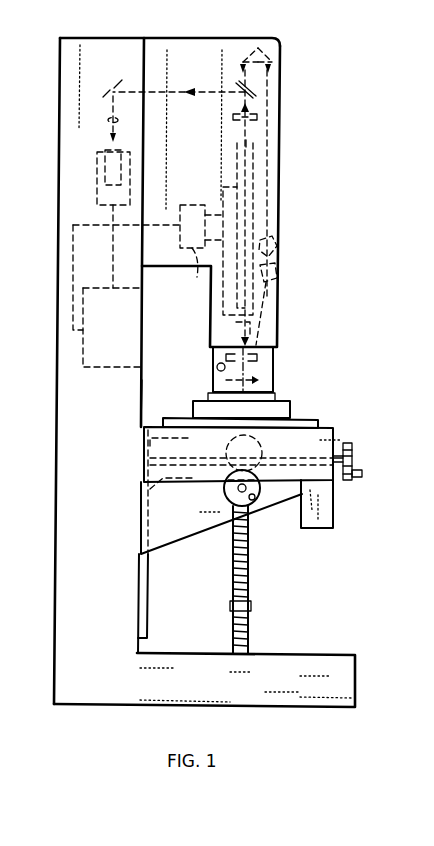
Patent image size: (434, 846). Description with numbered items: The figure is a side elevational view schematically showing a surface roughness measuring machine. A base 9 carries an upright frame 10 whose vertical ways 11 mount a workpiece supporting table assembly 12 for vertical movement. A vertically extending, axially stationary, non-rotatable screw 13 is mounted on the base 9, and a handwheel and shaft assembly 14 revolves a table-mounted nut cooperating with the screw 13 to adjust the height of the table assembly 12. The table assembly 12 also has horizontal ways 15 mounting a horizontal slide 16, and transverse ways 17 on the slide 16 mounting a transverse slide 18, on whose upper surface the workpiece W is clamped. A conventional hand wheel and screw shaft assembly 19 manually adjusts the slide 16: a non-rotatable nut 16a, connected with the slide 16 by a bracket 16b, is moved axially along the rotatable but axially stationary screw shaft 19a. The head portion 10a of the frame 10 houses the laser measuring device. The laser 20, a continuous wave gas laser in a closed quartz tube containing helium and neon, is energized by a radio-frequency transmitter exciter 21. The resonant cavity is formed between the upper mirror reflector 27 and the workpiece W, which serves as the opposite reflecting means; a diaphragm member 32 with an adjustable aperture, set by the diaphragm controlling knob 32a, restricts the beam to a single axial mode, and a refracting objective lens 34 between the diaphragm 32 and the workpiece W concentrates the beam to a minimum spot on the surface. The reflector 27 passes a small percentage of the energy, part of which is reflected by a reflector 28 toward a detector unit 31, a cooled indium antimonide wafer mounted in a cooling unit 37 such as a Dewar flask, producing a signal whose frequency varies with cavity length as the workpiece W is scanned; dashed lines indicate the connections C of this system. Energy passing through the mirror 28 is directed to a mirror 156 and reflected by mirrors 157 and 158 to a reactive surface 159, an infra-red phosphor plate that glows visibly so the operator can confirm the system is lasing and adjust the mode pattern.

The base 9 is at (293, 660).
The upright frame 10 is at (59, 430).
The head portion 10a is at (279, 146).
The vertical ways 11 is at (148, 621).
The workpiece supporting table assembly 12 is at (256, 510).
The screw 13 is at (249, 608).
The handwheel and shaft assembly 14 is at (221, 536).
The horizontal ways 15 is at (164, 428).
The horizontal slide 16 is at (320, 428).
The non-rotatable nut 16a is at (150, 489).
The bracket 16b is at (149, 437).
The transverse ways 17 is at (305, 421).
The transverse slide 18 is at (288, 417).
The hand wheel and screw shaft assembly 19 is at (352, 453).
The screw shaft 19a is at (338, 447).
The laser 20 is at (253, 172).
The radio-frequency transmitter exciter 21 is at (197, 279).
The mirror reflector 27 is at (262, 110).
The reflector 28 is at (262, 88).
The detector unit 31 is at (105, 151).
The diaphragm member 32 is at (279, 333).
The diaphragm controlling knob 32a is at (213, 349).
The refracting objective lens 34 is at (222, 378).
The cooling unit 37 is at (97, 186).
The mirror 156 is at (245, 40).
The mirror 157 is at (272, 40).
The mirror 158 is at (279, 292).
The reactive surface 159 is at (279, 236).
The circuit C is at (73, 369).
The workpiece W is at (277, 402).